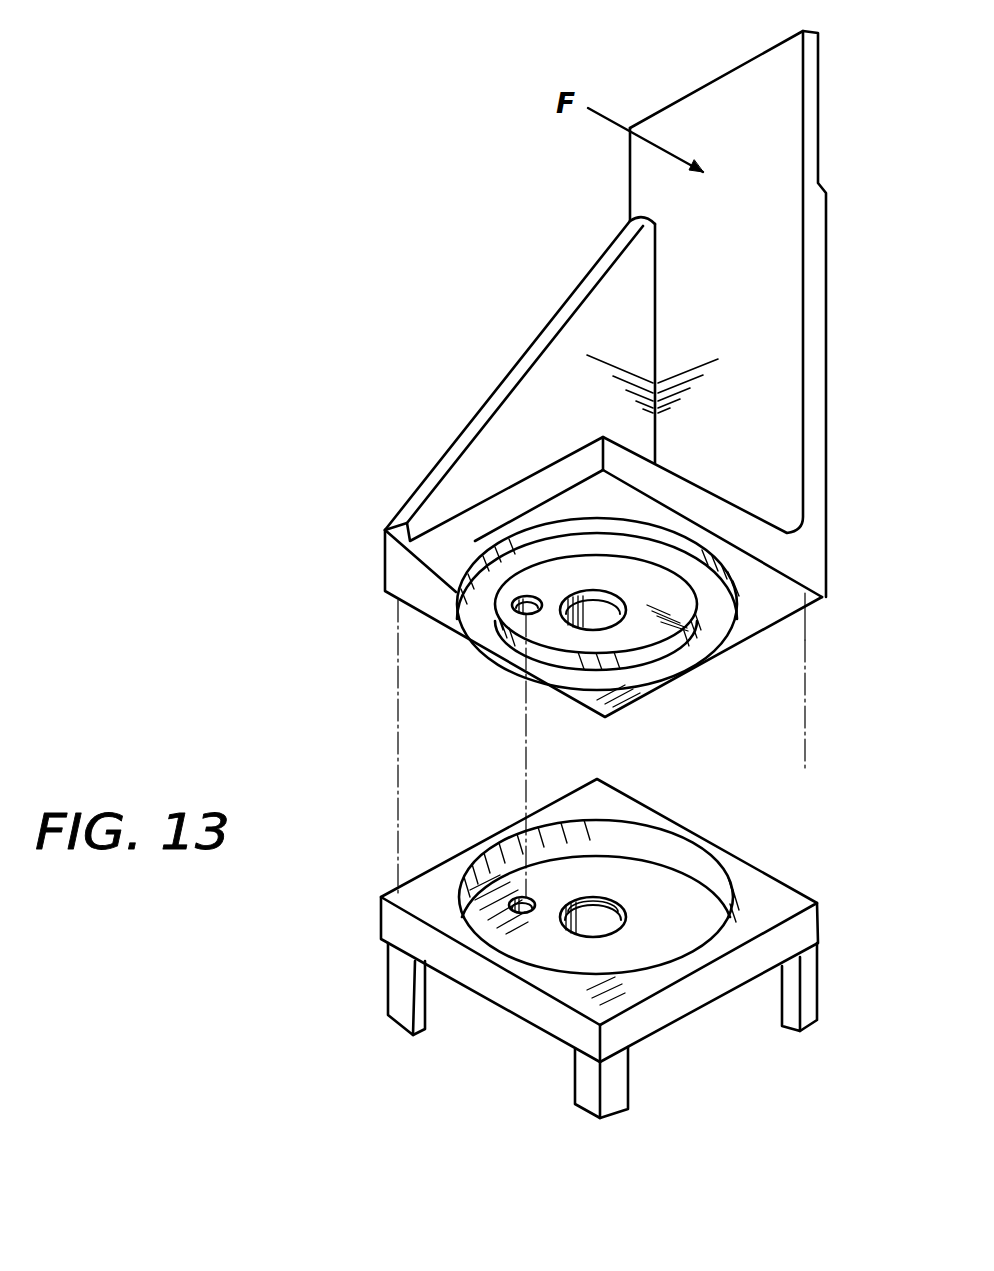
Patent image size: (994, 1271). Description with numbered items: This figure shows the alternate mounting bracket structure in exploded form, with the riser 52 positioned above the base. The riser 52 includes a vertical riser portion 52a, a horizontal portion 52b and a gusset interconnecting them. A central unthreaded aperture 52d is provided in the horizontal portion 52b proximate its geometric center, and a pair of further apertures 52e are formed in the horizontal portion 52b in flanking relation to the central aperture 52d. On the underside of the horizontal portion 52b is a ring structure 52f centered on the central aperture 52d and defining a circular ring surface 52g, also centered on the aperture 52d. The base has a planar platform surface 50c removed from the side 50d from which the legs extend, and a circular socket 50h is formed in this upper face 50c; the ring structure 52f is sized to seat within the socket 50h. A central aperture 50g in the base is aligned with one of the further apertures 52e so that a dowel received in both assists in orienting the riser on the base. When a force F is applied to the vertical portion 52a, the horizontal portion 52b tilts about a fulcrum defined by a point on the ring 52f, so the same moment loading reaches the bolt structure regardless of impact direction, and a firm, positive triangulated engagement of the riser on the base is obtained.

The riser 52 is at (745, 93).
The riser portion 52a is at (825, 412).
The horizontal portion 52b is at (513, 500).
The central unthreaded aperture 52d is at (608, 613).
The further apertures 52e is at (518, 597).
The ring structure 52f is at (482, 652).
The circular ring surface 52g is at (477, 595).
The platform surface 50c is at (760, 895).
The side 50d is at (597, 899).
The central aperture 50g is at (513, 897).
The circular socket 50h is at (610, 833).